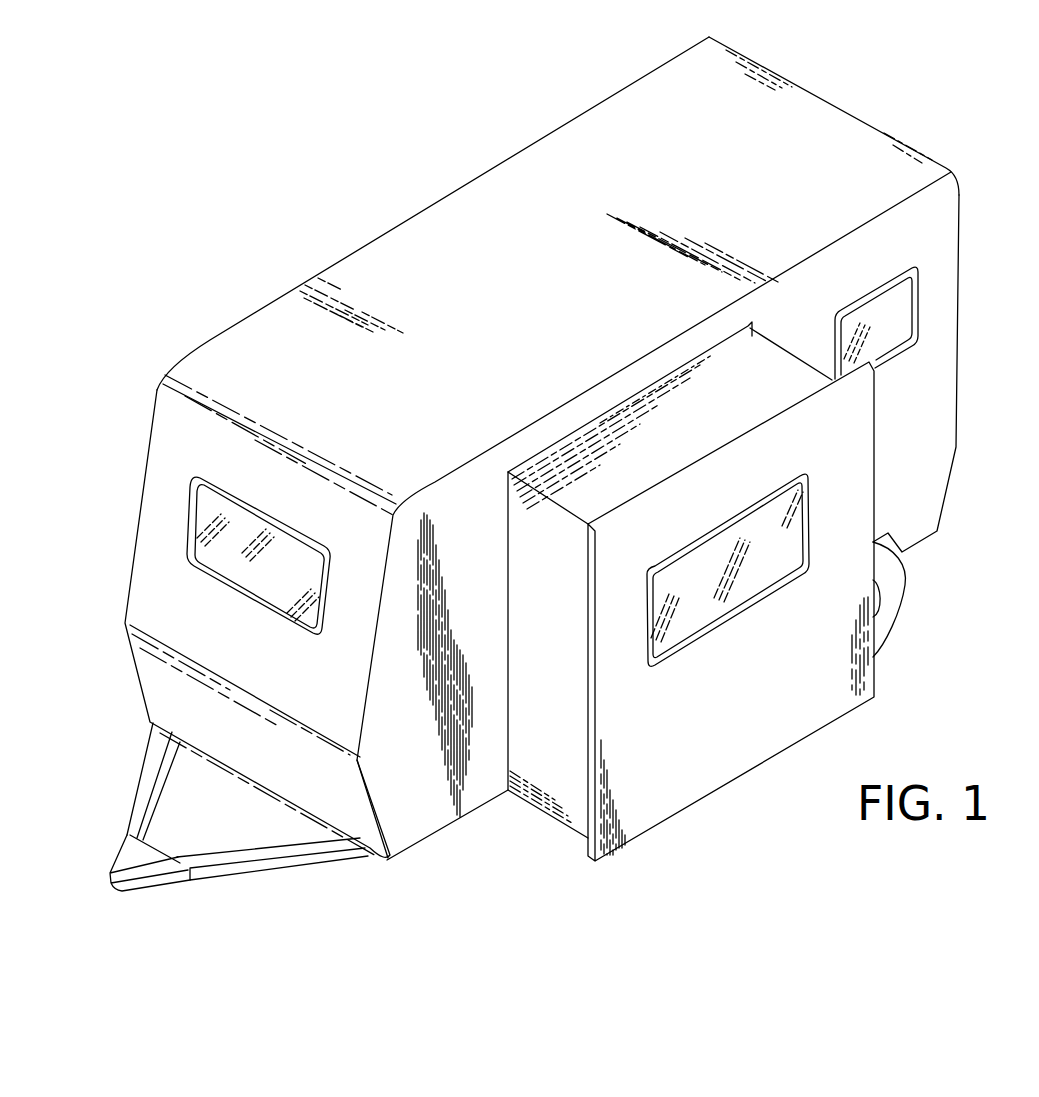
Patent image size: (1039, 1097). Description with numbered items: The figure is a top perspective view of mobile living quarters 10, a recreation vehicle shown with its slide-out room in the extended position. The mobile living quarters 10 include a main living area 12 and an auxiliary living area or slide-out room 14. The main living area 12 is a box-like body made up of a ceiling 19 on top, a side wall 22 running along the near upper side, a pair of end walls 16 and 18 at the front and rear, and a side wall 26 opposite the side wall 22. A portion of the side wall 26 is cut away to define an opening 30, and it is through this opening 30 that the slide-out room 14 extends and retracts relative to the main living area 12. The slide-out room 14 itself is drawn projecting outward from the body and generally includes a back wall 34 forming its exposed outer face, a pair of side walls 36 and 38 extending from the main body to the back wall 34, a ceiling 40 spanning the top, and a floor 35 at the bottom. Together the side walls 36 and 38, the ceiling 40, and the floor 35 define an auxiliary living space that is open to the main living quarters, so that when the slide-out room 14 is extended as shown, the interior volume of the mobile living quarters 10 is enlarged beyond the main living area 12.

The mobile living quarters 10 is at (568, 464).
The main living area 12 is at (568, 464).
The slide-out room 14 is at (667, 585).
The end wall 16 is at (330, 689).
The end wall 18 is at (826, 99).
The ceiling 19 is at (518, 338).
The side wall 22 is at (487, 168).
The side wall 26 is at (945, 400).
The opening 30 is at (661, 382).
The back wall 34 is at (788, 686).
The floor 35 is at (565, 819).
The side wall 36 is at (780, 348).
The side wall 38 is at (522, 557).
The ceiling 40 is at (747, 405).